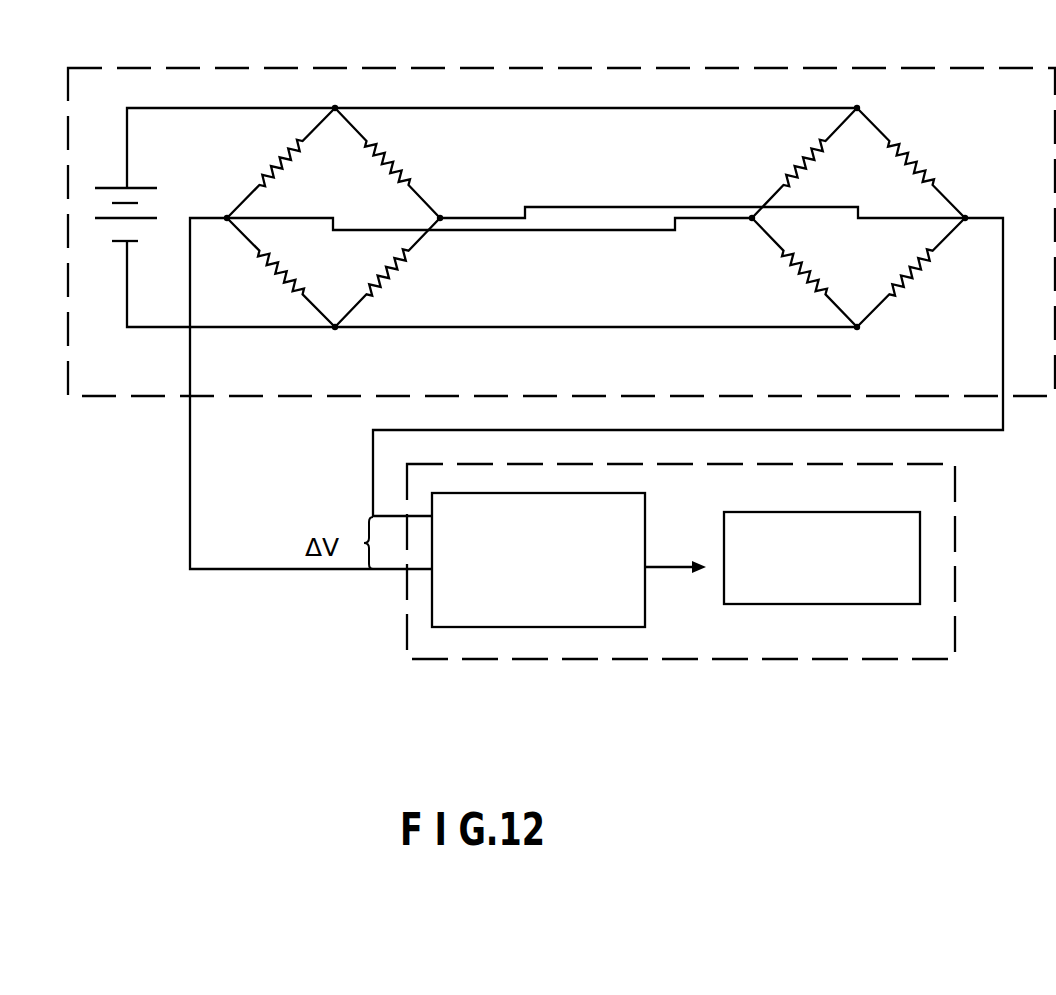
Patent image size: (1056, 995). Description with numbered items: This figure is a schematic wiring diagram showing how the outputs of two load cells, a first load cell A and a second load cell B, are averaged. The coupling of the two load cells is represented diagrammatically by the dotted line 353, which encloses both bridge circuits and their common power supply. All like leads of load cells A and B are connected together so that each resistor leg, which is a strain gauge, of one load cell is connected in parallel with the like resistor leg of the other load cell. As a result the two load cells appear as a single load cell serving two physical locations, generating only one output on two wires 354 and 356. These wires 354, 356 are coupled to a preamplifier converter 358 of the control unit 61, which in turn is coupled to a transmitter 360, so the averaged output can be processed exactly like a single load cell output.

The dotted line 353 is at (462, 68).
The wire 354 is at (222, 569).
The wire 356 is at (373, 452).
The preamplifier converter 358 is at (510, 617).
The transmitter 360 is at (819, 604).
The control unit 61 is at (691, 659).